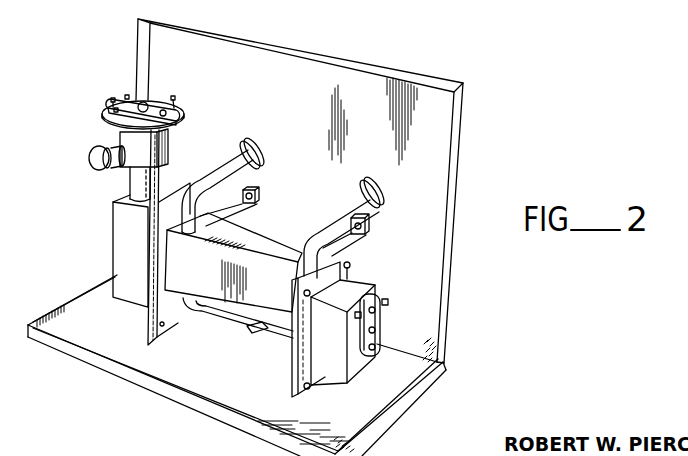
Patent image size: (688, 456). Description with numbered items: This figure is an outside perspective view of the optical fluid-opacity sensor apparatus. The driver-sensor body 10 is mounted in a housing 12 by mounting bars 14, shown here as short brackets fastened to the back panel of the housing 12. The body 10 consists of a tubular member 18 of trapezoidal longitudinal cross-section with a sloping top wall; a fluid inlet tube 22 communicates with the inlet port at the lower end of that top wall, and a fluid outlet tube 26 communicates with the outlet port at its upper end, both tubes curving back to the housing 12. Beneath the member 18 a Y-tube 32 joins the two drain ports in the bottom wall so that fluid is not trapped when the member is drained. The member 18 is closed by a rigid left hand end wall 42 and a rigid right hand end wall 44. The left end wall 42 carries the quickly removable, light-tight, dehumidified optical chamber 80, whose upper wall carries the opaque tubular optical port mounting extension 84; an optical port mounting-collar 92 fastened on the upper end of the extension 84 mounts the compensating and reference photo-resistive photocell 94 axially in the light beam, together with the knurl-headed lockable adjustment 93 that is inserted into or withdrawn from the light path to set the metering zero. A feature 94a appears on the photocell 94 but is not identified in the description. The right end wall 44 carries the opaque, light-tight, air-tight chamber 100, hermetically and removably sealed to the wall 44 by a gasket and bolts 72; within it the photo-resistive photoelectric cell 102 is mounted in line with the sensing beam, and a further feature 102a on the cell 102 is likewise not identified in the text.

The driver-sensor body 10 is at (293, 237).
The housing 12 is at (303, 154).
The mounting bar 14 is at (234, 210).
The tubular member 18 is at (196, 285).
The fluid inlet tube 22 is at (338, 213).
The fluid outlet tube 26 is at (223, 163).
The Y-tube 32 is at (226, 333).
The left hand end wall 42 is at (157, 338).
The right hand end wall 44 is at (297, 337).
The bolts 72 is at (311, 293).
The optical chamber 80 is at (126, 241).
The optical port mounting extension 84 is at (137, 188).
The optical port mounting-collar 92 is at (123, 133).
The lockable adjustment 93 is at (95, 155).
The photo-resistive photocell 94 is at (137, 97).
The indicator bar 94a is at (155, 100).
The light-tight air tight chamber 100 is at (352, 370).
The photo-resistive photoelectric cell 102 is at (386, 303).
The connector terminal 102a is at (377, 330).